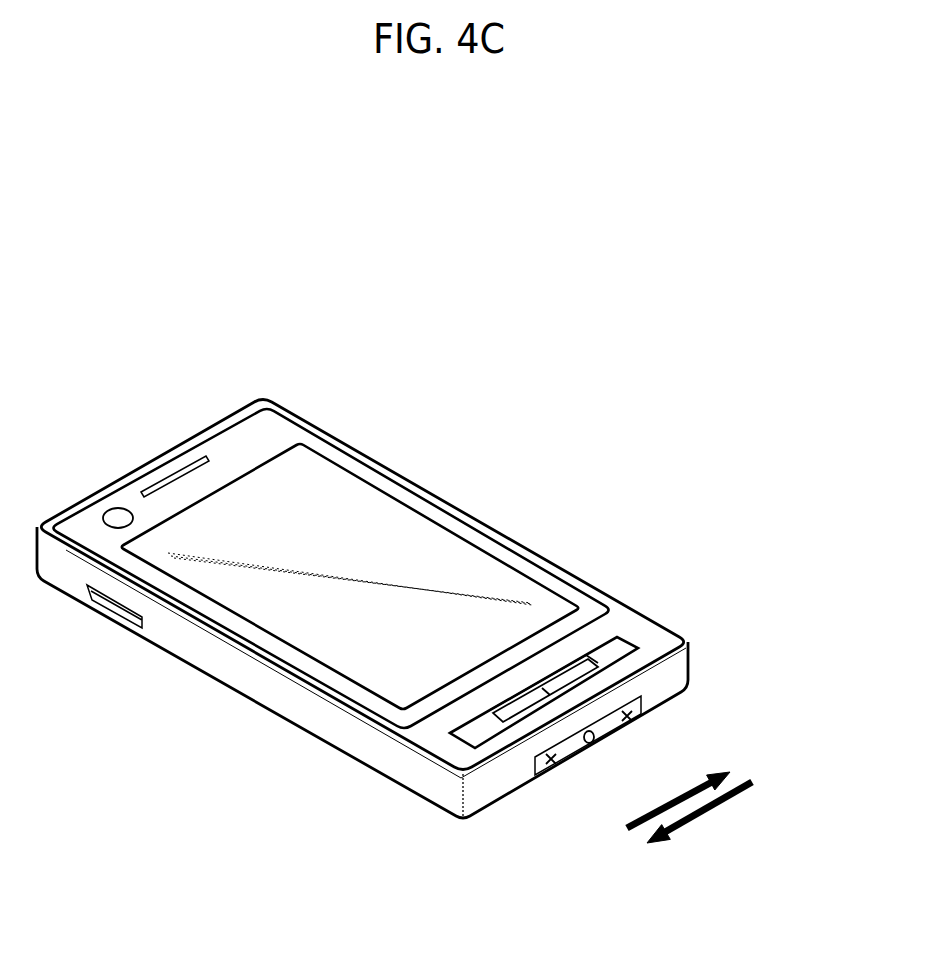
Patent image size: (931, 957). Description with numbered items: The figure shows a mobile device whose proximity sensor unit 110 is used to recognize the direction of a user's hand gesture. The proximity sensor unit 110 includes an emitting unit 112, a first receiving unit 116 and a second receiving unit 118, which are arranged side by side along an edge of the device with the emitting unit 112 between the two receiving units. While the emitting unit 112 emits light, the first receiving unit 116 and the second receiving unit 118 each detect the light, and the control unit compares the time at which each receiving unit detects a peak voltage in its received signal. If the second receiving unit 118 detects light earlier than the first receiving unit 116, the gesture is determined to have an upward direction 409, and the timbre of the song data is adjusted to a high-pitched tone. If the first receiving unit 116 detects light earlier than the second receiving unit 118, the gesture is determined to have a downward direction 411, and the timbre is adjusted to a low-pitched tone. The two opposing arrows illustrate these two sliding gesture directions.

The proximity sensor unit 110 is at (652, 716).
The emitting unit 112 is at (596, 744).
The first receiving unit 116 is at (636, 724).
The second receiving unit 118 is at (557, 776).
The upward direction 409 is at (722, 763).
The downward direction 411 is at (754, 780).